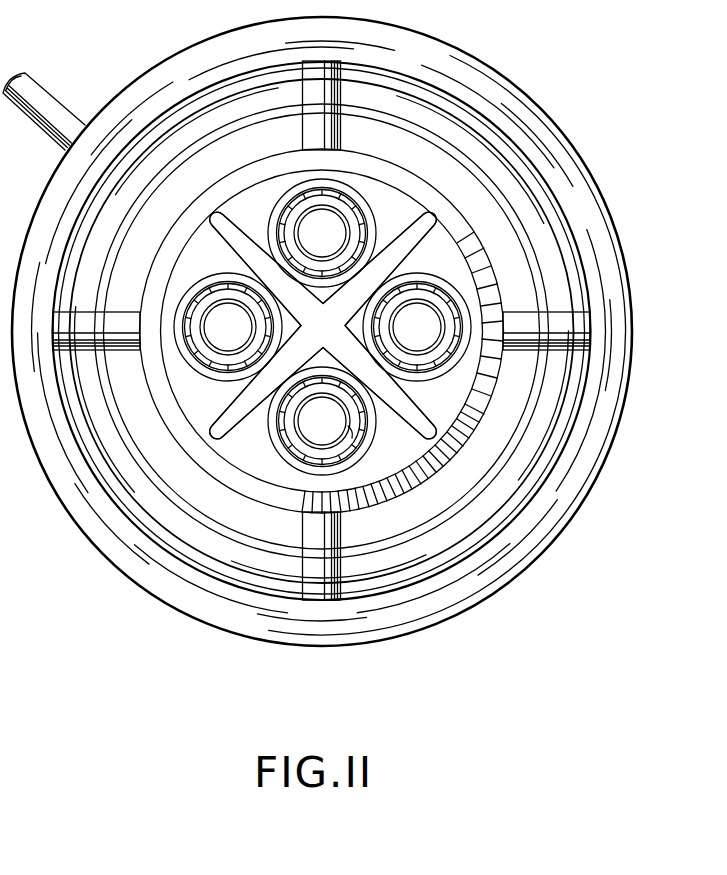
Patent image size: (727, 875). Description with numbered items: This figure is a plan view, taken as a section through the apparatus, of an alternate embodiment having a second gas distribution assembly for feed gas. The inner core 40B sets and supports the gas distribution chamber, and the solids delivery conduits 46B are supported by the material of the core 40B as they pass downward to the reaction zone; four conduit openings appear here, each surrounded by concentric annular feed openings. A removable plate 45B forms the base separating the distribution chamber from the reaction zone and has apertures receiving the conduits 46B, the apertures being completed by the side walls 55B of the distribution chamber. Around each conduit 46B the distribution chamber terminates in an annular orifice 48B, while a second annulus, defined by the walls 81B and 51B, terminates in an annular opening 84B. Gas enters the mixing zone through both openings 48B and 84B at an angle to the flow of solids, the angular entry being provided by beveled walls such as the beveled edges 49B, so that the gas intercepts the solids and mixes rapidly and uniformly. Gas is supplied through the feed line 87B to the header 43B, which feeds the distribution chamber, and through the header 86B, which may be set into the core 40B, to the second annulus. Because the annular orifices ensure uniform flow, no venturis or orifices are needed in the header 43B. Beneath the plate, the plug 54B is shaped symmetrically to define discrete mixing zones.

The inner core 40B is at (605, 92).
The header 43B is at (615, 278).
The removable plate 45B is at (280, 203).
The conduit 46B is at (323, 356).
The annular orifice 48B is at (362, 458).
The beveled edge 49B is at (348, 193).
The conduit wall 51B is at (300, 420).
The plug 54B is at (340, 337).
The side wall 55B is at (492, 410).
The wall 81B is at (367, 421).
The annular opening 84B is at (290, 443).
The header 86B is at (547, 240).
The feed line 87B is at (110, 38).